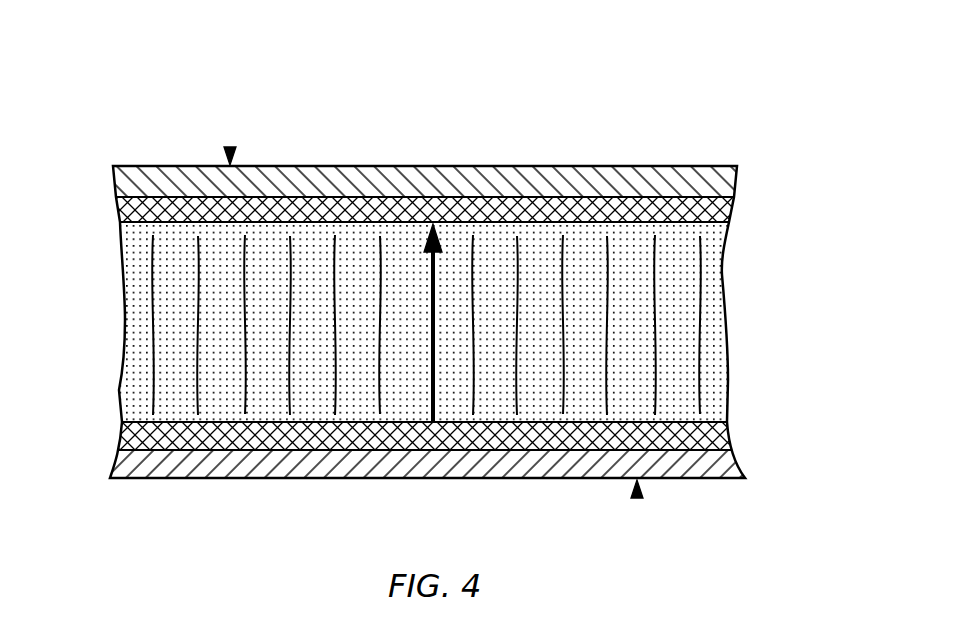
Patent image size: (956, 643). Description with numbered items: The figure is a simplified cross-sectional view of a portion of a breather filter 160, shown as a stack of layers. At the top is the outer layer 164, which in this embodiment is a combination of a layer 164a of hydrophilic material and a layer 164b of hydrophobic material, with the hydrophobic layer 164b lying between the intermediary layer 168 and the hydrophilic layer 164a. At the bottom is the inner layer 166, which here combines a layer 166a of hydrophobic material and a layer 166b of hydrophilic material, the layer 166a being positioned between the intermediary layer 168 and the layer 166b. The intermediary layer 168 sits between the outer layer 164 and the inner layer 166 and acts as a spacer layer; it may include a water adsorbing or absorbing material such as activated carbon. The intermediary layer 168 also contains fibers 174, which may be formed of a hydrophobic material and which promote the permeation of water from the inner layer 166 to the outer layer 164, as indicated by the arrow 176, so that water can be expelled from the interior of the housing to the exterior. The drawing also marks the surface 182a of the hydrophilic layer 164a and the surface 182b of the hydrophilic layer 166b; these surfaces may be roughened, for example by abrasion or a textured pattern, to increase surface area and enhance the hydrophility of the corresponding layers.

The breather filter 160 is at (431, 297).
The outer layer 164 is at (427, 193).
The layer of hydrophilic material 164a is at (728, 187).
The layer of hydrophobic material 164b is at (727, 217).
The intermediary layer 168 is at (410, 332).
The fibers 174 is at (566, 272).
The arrow 176 is at (428, 378).
The inner layer 166 is at (431, 451).
The layer of hydrophobic material 166a is at (724, 438).
The layer of hydrophilic material 166b is at (733, 471).
The surface of the layer 164a 182a is at (230, 148).
The surface of the layer 166b 182b is at (637, 497).